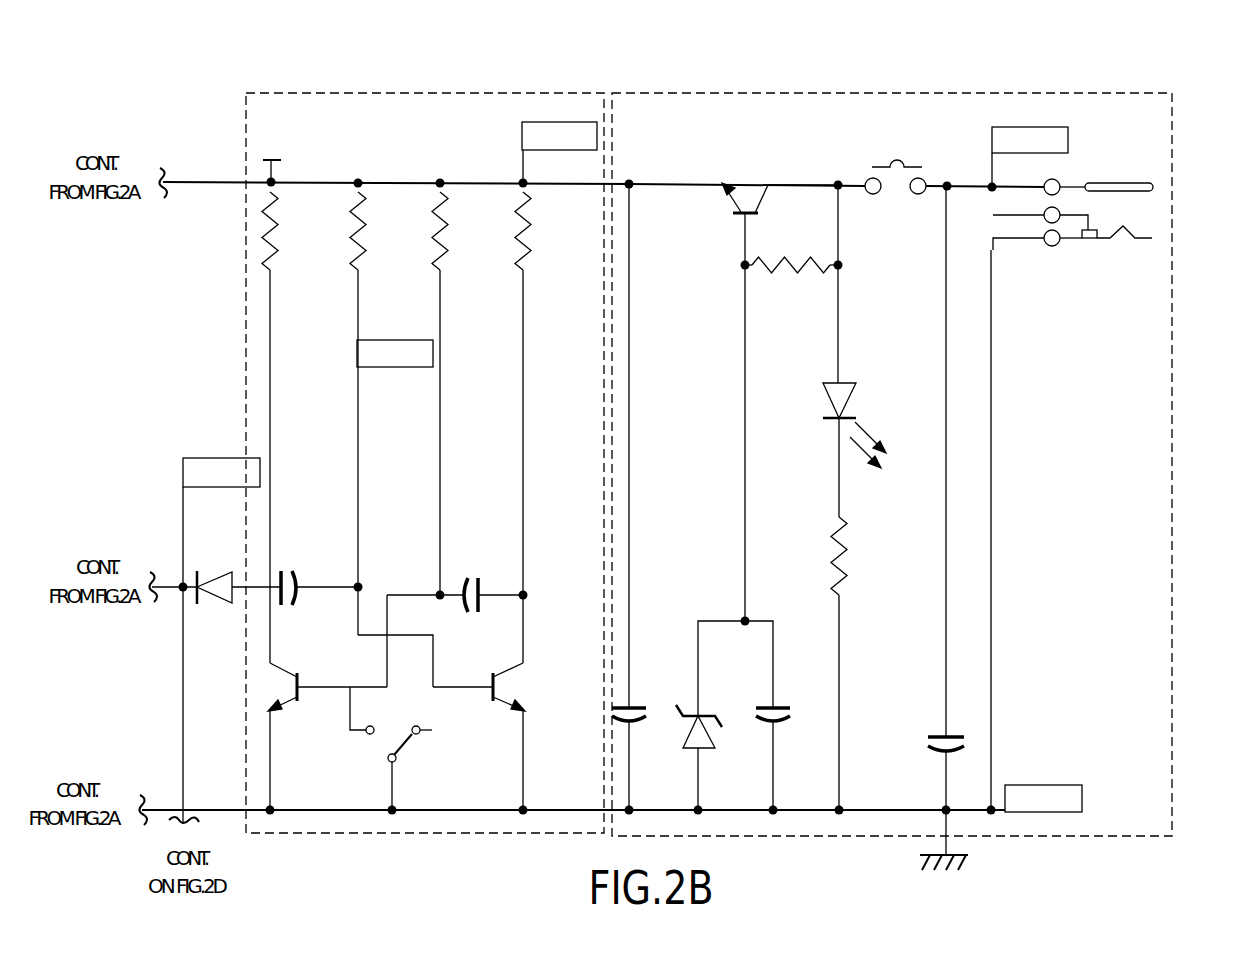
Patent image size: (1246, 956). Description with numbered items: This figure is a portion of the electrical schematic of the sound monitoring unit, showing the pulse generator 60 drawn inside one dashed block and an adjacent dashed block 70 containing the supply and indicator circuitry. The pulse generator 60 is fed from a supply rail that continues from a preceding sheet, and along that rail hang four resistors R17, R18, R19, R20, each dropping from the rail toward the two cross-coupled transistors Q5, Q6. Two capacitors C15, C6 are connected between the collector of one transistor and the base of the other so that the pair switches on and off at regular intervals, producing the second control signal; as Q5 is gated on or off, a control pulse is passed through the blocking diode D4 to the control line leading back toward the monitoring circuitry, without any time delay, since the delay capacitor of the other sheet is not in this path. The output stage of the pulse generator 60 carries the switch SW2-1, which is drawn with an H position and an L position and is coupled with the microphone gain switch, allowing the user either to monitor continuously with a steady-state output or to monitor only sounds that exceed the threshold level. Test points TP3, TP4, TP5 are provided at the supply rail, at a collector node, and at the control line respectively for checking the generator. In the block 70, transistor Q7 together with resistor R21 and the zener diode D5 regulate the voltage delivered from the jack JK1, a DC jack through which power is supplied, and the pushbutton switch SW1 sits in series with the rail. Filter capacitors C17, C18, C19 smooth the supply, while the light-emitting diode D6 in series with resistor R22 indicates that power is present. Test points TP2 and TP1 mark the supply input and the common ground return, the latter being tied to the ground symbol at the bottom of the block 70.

The pulse generator 60 is at (288, 118).
The power and indicator circuit section 70 is at (1157, 153).
The resistor R17 1K R17 is at (290, 231).
The resistor R18 560K R18 is at (381, 231).
The resistor R19 68K R19 is at (459, 231).
The resistor R20 10K R20 is at (541, 231).
The resistor R21 220K R21 is at (791, 238).
The resistor R22 1K2 R22 is at (858, 556).
The capacitor C6 10uF C6 is at (468, 565).
The capacitor C15 10uF C15 is at (304, 561).
The capacitor C17 100uF C17 is at (645, 683).
The capacitor C18 10uF C18 is at (787, 746).
The capacitor C19 220uF C19 is at (932, 711).
The blocking diode D4 is at (215, 617).
The zener diode D5 602 D5 is at (704, 696).
The LED D6 is at (863, 418).
The transistor Q5 is at (294, 718).
The transistor Q6 9013 Q6 is at (528, 684).
The transistor Q7 9013 Q7 is at (780, 172).
The pushbutton switch SW1 is at (893, 148).
The switch SW2-1 is at (399, 749).
The DC jack JK1 is at (1073, 213).
The test point TP1 is at (1043, 798).
The test point TP2 is at (1030, 157).
The test point TP3 is at (559, 152).
The test point TP4 is at (395, 353).
The test point TP5 is at (221, 472).